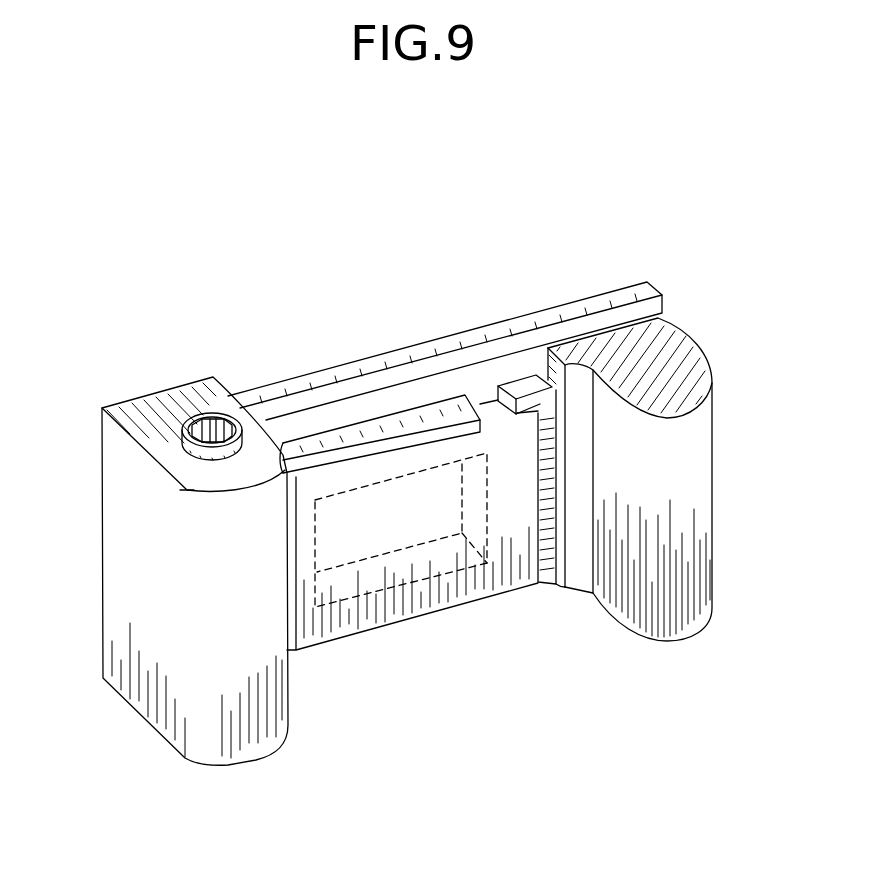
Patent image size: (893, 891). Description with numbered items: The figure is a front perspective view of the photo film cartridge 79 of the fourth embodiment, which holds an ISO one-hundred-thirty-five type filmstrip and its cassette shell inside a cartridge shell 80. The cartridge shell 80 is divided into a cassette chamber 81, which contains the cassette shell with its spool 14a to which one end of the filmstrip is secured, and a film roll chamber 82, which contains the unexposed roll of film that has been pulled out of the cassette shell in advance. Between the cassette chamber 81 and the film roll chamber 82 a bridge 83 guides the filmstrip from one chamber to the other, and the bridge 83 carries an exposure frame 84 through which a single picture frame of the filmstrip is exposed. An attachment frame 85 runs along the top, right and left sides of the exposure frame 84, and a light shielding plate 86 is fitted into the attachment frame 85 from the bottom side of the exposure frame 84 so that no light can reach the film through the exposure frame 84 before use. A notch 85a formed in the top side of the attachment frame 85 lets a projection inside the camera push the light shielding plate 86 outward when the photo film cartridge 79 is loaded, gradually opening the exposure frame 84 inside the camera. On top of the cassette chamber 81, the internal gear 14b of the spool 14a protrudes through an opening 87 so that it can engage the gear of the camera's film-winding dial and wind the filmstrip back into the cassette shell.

The photo film cartridge 79 is at (357, 313).
The cartridge shell 80 is at (272, 368).
The cassette chamber 81 is at (185, 758).
The film roll chamber 82 is at (664, 616).
The bridge 83 is at (488, 334).
The exposure frame 84 is at (388, 556).
The attachment frame 85 is at (547, 464).
The notch 85a is at (490, 387).
The light shielding plate 86 is at (402, 603).
The opening 87 is at (187, 491).
The spool 14a is at (195, 445).
The internal gear 14b is at (224, 390).